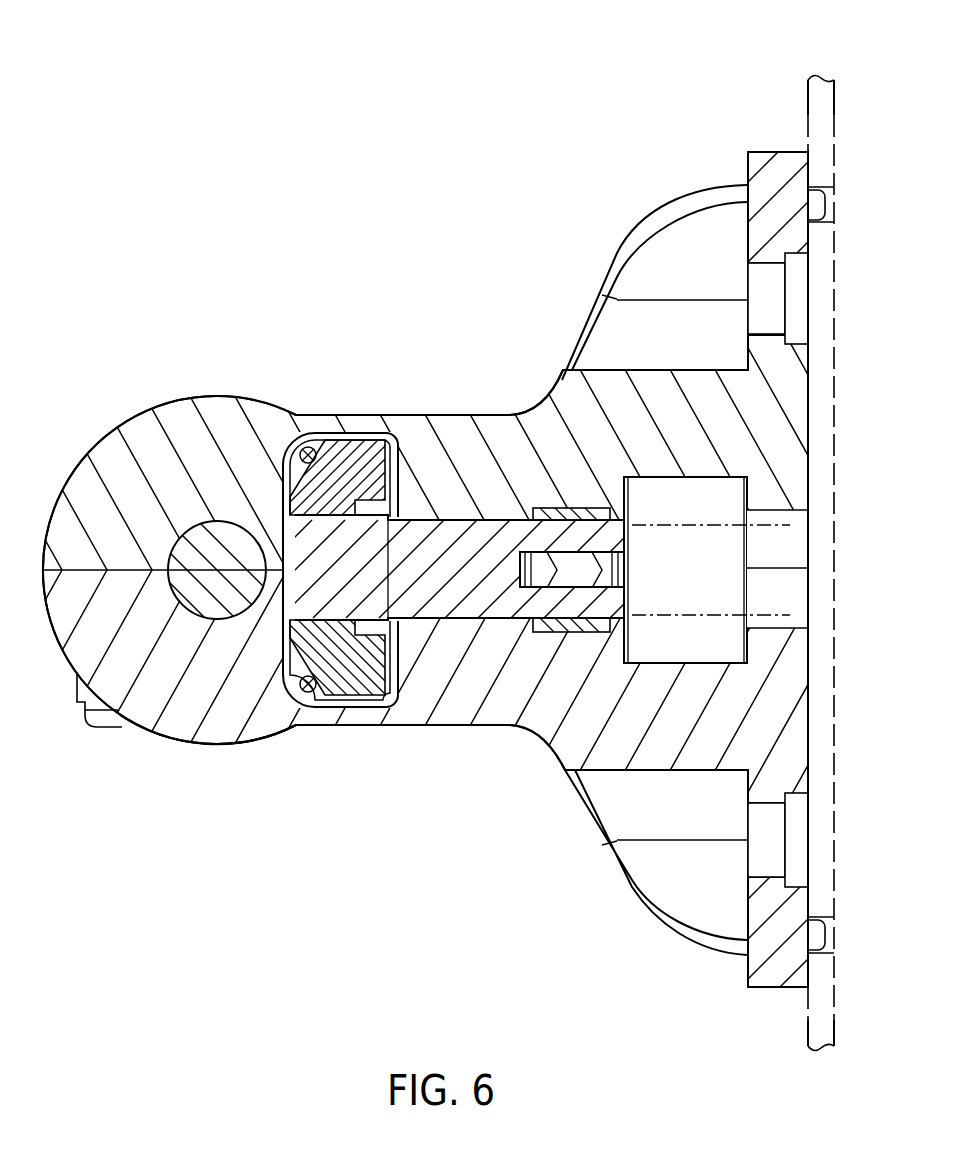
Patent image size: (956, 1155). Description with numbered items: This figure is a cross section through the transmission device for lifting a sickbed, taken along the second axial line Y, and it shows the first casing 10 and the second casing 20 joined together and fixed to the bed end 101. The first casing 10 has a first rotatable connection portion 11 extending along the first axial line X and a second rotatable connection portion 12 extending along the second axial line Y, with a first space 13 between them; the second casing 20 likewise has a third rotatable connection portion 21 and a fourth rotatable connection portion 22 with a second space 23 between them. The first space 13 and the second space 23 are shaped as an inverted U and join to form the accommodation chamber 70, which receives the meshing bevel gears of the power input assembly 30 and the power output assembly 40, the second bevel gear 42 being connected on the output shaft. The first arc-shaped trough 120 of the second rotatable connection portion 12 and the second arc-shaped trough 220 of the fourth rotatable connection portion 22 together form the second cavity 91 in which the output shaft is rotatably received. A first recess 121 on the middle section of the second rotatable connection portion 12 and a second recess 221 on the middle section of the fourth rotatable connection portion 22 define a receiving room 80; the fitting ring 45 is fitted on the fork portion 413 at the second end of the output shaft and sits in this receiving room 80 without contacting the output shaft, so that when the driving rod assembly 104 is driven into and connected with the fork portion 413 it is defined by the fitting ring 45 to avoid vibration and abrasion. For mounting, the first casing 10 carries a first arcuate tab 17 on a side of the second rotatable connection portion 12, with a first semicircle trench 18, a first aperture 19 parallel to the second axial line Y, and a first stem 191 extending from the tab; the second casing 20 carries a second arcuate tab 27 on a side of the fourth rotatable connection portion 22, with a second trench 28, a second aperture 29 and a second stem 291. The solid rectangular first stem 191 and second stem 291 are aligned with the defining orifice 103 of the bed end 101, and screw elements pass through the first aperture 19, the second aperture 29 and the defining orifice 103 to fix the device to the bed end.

The first casing 10 is at (128, 742).
The first rotatable connection portion 11 is at (178, 722).
The second rotatable connection portion 12 is at (450, 707).
The first space 13 is at (309, 694).
The first arcuate tab 17 is at (727, 905).
The first semicircle trench 18 is at (690, 855).
The first aperture 19 is at (772, 837).
The second casing 20 is at (131, 400).
The third rotatable connection portion 21 is at (178, 412).
The fourth rotatable connection portion 22 is at (557, 405).
The second space 23 is at (297, 514).
The second arcuate tab 27 is at (730, 237).
The second trench 28 is at (675, 267).
The second aperture 29 is at (773, 303).
The power input assembly 30 is at (213, 556).
The power output assembly 40 is at (419, 600).
The second bevel gear 42 is at (357, 478).
The fitting ring 45 is at (582, 514).
The accommodation chamber 70 is at (338, 620).
The receiving room 80 is at (523, 704).
The second cavity 91 is at (486, 416).
The bed end 101 is at (823, 152).
The defining orifice 103 is at (828, 210).
The driving rod assembly 104 is at (697, 537).
The first arc-shaped trough 120 is at (465, 518).
The first recess 121 is at (577, 634).
The first stem 191 is at (817, 937).
The second arc-shaped trough 220 is at (418, 520).
The second recess 221 is at (517, 490).
The second stem 291 is at (822, 203).
The fork portion 413 is at (562, 510).